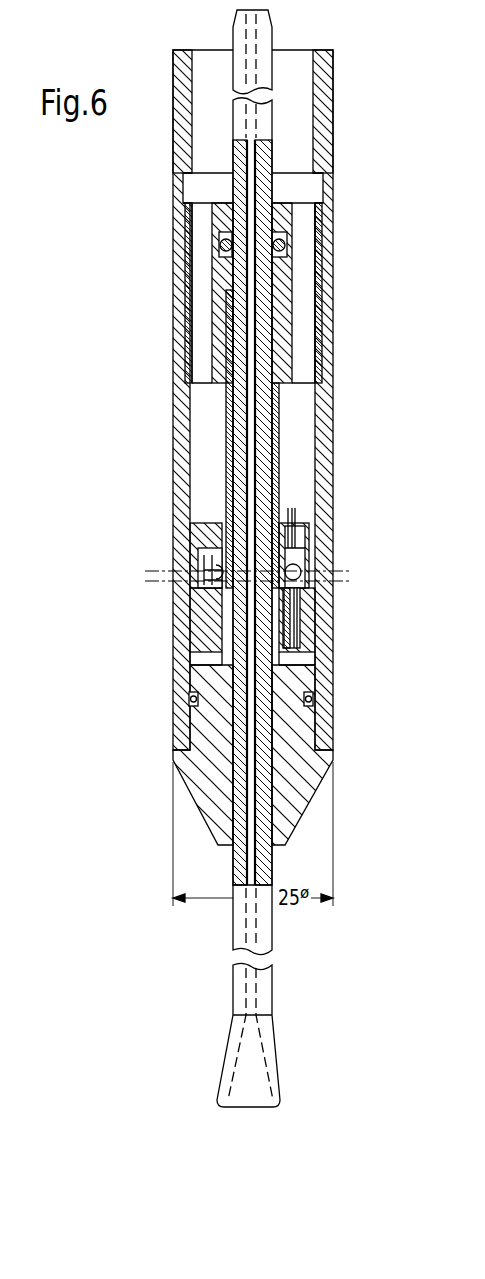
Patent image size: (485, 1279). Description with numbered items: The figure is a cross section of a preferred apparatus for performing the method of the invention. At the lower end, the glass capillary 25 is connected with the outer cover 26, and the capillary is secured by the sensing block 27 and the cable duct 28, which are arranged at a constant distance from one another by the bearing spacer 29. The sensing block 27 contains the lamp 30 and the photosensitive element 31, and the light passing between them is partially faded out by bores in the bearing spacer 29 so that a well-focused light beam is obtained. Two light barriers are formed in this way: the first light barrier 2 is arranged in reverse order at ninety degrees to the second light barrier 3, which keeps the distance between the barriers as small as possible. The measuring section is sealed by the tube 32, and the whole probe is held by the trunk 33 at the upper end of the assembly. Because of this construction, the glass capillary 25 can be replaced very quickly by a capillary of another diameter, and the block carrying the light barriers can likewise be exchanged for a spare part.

The trunk 33 is at (325, 119).
The tube 32 is at (322, 492).
The cable duct 28 is at (285, 284).
The bearing spacer 29 is at (283, 433).
The photosensitive element 31 is at (208, 562).
The lamp 30 is at (297, 563).
The second light barrier 3 is at (347, 573).
The first light barrier 2 is at (323, 612).
The sensing block 27 is at (305, 633).
The outer cover 26 is at (308, 765).
The glass capillary 25 is at (260, 1003).